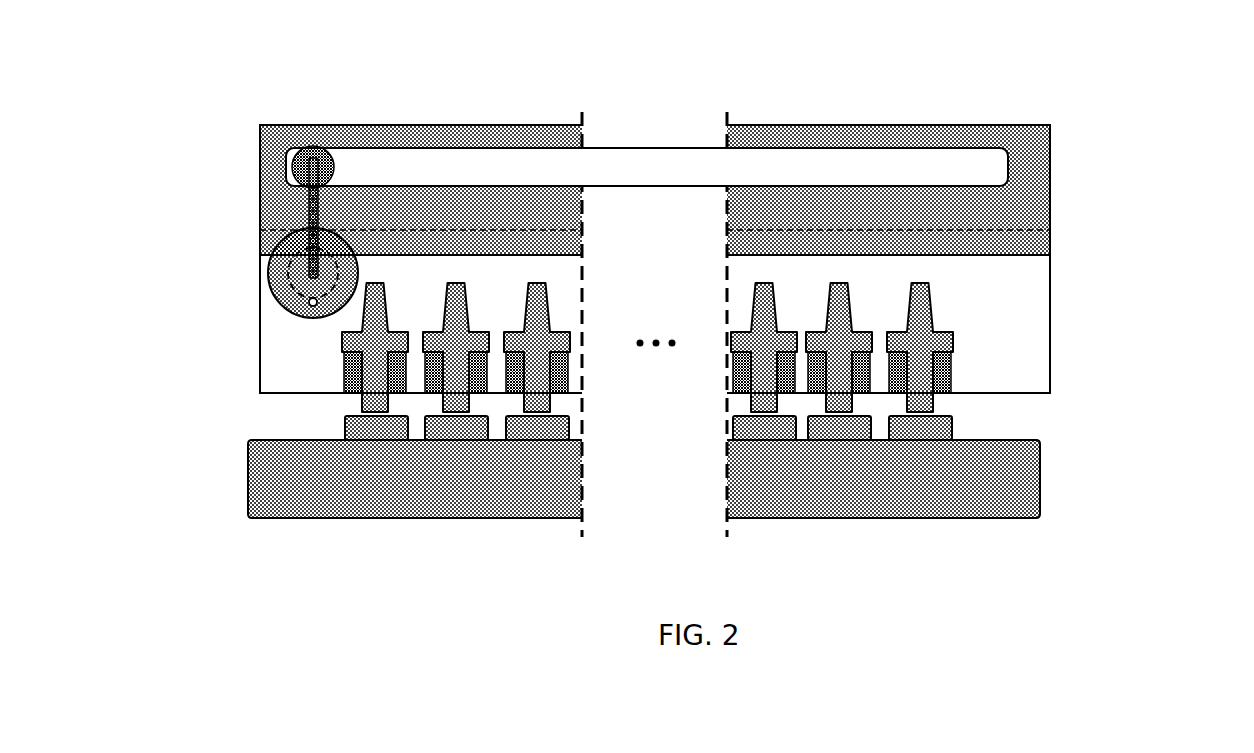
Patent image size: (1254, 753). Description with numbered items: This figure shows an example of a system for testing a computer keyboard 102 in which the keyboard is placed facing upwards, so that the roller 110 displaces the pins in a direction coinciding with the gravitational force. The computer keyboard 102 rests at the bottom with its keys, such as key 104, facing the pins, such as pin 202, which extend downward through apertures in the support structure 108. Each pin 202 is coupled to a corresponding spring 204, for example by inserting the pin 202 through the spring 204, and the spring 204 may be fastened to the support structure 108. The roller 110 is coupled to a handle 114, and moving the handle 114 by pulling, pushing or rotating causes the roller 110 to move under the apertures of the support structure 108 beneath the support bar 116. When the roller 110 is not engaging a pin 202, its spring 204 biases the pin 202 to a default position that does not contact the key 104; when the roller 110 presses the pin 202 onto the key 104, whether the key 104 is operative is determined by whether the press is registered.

The computer keyboard 102 is at (993, 480).
The key 104 is at (933, 430).
The support structure 108 is at (308, 349).
The roller 110 is at (278, 265).
The handle 114 is at (298, 158).
The support bar 116 is at (1025, 140).
The pin 202 is at (918, 332).
The spring 204 is at (943, 373).